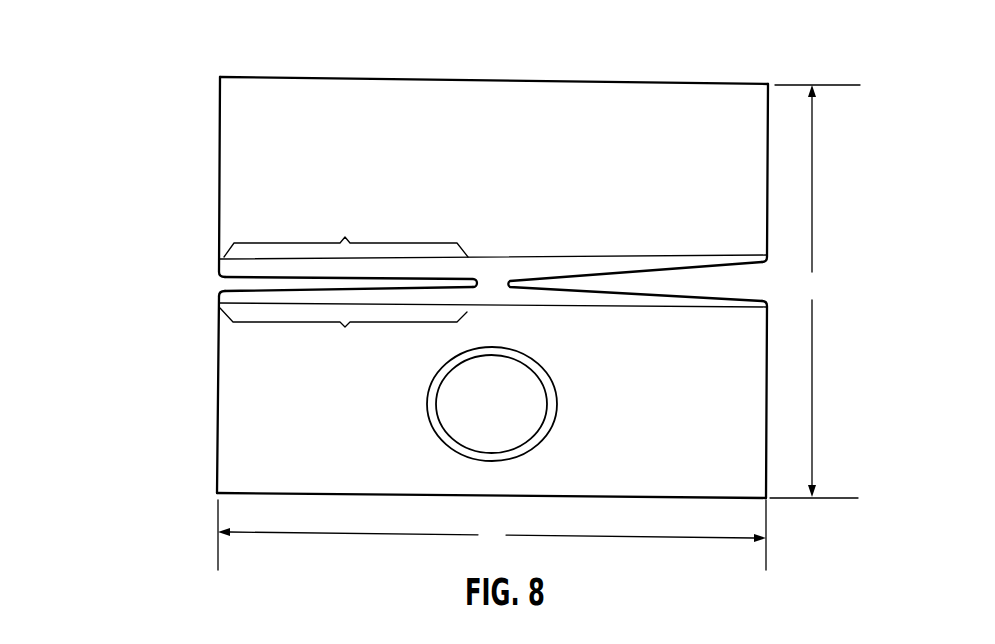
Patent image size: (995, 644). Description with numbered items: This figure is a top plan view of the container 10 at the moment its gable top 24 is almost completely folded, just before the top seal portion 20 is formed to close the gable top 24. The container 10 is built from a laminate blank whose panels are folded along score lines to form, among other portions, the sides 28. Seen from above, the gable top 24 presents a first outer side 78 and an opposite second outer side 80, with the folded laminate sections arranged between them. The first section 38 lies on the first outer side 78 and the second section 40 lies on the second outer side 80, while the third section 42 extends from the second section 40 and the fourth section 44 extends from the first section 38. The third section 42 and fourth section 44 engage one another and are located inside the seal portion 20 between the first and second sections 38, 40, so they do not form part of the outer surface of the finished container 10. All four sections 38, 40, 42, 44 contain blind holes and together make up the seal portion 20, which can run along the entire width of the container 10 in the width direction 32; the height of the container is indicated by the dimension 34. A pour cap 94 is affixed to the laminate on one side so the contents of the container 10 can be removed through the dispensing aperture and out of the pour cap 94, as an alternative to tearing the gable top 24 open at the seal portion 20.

The container 10 is at (464, 285).
The seal portion 20 is at (205, 270).
The gable top 24 is at (250, 138).
The sides 28 is at (452, 78).
The width direction 32 is at (492, 535).
The height dimension 34 is at (815, 291).
The first section 38 is at (343, 333).
The second section 40 is at (346, 233).
The third section 42 is at (403, 277).
The fourth section 44 is at (382, 292).
The first outer side 78 is at (666, 406).
The second outer side 80 is at (639, 155).
The pour cap 94 is at (500, 413).